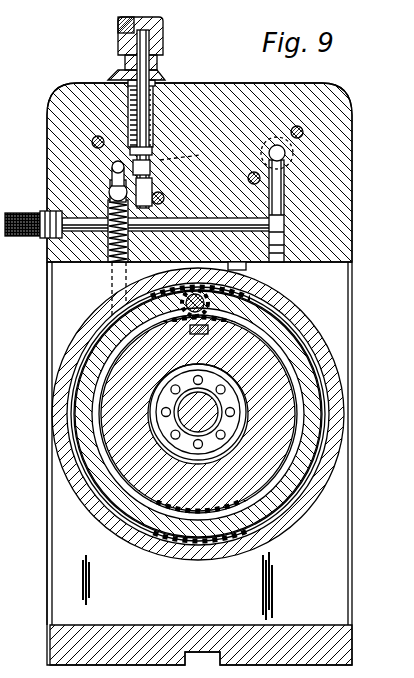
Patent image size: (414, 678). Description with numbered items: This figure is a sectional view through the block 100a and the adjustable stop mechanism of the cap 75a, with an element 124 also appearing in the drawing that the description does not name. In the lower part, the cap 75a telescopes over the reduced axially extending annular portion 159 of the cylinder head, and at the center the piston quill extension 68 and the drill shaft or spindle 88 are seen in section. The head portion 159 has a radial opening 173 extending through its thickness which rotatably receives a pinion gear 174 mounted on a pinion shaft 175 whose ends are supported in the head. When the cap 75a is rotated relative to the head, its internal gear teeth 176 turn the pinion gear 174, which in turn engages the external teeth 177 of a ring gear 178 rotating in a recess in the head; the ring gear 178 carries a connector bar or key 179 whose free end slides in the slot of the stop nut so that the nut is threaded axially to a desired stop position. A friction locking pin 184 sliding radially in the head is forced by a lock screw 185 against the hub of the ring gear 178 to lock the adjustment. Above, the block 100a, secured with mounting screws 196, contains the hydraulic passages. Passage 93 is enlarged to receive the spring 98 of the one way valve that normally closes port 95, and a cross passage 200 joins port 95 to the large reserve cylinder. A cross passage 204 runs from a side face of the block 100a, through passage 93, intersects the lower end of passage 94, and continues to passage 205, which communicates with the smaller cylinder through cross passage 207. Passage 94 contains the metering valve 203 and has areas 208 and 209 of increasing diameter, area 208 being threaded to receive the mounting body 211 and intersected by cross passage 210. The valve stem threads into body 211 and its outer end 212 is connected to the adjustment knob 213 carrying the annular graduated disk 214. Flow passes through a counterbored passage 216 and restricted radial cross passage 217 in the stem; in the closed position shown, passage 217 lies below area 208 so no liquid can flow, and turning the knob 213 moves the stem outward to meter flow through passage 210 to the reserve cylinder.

The block 100a is at (346, 79).
The bottom wall of housing 124 is at (201, 651).
The cap 75a is at (56, 458).
The mounting screws 196 is at (92, 140).
The cross passage 204 is at (222, 217).
The passage 205 is at (284, 200).
The cross passage 207 is at (290, 156).
The spring 98 is at (130, 243).
The passage 93 is at (170, 308).
The passage 94 is at (140, 205).
The port 95 is at (109, 192).
The cross passage 200 is at (112, 170).
The metering valve 203 is at (153, 125).
The threaded mounting body 211 is at (128, 92).
The annular graduated disk 214 is at (120, 66).
The stem end 212 is at (165, 38).
The adjustment knob 213 is at (118, 30).
The area of increased diameter 209 is at (162, 88).
The cross passage 210 is at (152, 150).
The area of increased diameter 208 is at (191, 155).
The counterbored passage 216 is at (150, 175).
The radial cross passage 217 is at (152, 187).
The friction locking pin 184 is at (199, 249).
The ring gear 178 is at (290, 355).
The internal gear teeth 176 is at (268, 300).
The pinion shaft 175 is at (275, 312).
The reduced axially extending annular portion 159 is at (90, 372).
The external teeth 177 is at (148, 348).
The radial opening 173 is at (185, 295).
The pinion gear 174 is at (182, 290).
The connector bar or key 179 is at (198, 337).
The lock screw 185 is at (246, 267).
The piston quill extension 68 is at (226, 479).
The drill shaft or spindle 88 is at (208, 419).